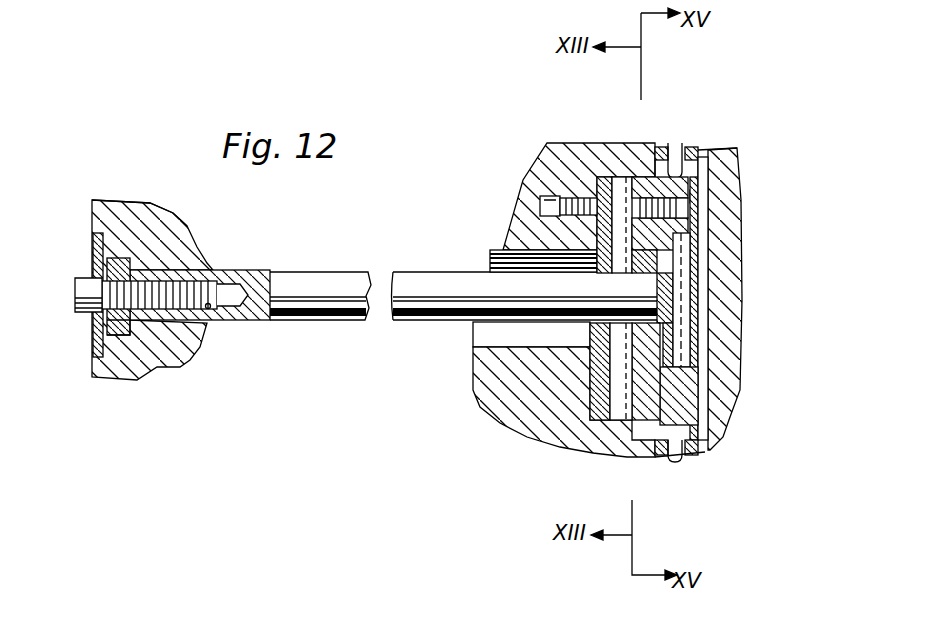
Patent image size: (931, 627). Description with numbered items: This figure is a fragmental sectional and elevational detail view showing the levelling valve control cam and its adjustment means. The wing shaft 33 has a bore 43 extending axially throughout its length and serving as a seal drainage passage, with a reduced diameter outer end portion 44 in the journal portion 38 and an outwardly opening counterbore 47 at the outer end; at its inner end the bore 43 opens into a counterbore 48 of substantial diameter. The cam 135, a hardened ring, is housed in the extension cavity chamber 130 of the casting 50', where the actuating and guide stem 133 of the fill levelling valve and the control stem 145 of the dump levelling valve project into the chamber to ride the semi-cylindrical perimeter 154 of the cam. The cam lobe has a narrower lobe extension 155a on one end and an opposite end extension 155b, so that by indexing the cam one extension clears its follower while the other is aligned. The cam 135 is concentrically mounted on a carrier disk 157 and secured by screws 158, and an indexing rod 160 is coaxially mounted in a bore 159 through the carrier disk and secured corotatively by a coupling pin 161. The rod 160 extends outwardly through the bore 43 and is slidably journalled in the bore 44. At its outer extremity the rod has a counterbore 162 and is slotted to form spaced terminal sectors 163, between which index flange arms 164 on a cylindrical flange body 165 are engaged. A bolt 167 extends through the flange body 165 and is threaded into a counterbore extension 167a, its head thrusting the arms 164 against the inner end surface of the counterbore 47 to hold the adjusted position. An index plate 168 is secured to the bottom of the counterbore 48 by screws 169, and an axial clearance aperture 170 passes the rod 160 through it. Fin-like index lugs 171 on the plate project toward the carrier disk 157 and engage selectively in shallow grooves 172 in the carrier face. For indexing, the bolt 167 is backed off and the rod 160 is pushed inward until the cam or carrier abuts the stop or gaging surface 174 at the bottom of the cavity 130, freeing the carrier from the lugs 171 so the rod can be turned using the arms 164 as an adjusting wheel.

The wing shaft 33 is at (538, 165).
The journal portion 38 is at (184, 248).
The bore 43 is at (500, 262).
The reduced diameter outer end portion 44 is at (222, 272).
The counterbore 47 is at (97, 267).
The counterbore 48 is at (623, 177).
The casting 50' is at (631, 302).
The extension cavity chamber 130 is at (698, 462).
The actuating and guide stem 133 is at (687, 147).
The cam 135 is at (687, 400).
The control stem 145 is at (668, 463).
The semi-cylindrical perimeter 154 is at (717, 457).
The lobe extension 155a is at (737, 147).
The lobe extension 155b is at (647, 423).
The carrier disk 157 is at (663, 257).
The screws 158 is at (693, 210).
The bore 159 is at (640, 303).
The indexing rod 160 is at (417, 268).
The coupling pin 161 is at (695, 353).
The counterbore 162 is at (170, 352).
The terminal sectors 163 is at (127, 313).
The index flange arms 164 is at (123, 327).
The cylindrical flange body 165 is at (118, 333).
The bolt 167 is at (79, 313).
The counterbore extension 167a is at (209, 309).
The index plate 168 is at (603, 400).
The screws 169 is at (570, 197).
The axial clearance aperture 170 is at (607, 328).
The index lugs 171 is at (620, 227).
The shallow grooves 172 is at (640, 245).
The stop or gaging surface 174 is at (707, 268).